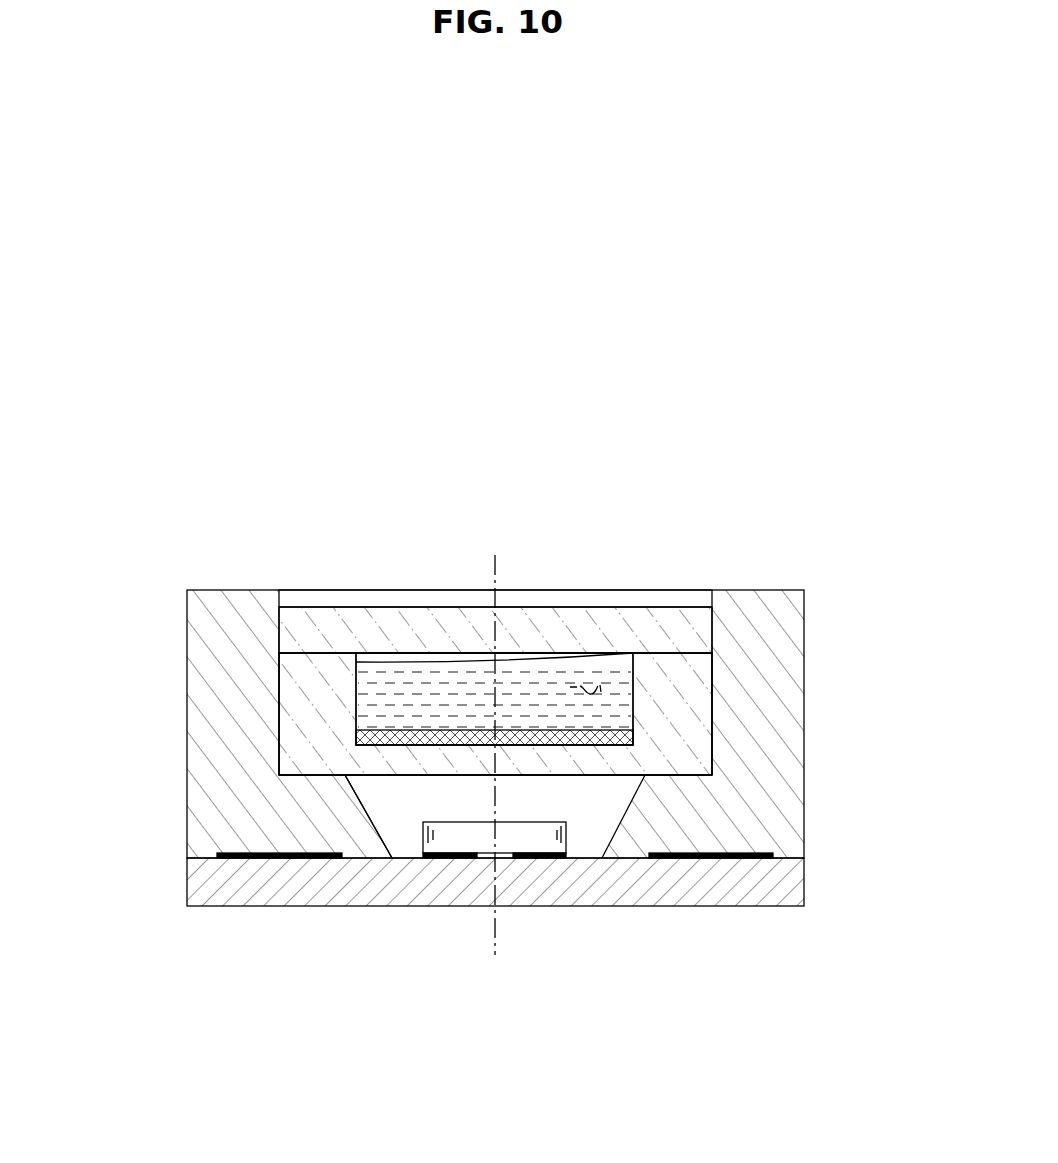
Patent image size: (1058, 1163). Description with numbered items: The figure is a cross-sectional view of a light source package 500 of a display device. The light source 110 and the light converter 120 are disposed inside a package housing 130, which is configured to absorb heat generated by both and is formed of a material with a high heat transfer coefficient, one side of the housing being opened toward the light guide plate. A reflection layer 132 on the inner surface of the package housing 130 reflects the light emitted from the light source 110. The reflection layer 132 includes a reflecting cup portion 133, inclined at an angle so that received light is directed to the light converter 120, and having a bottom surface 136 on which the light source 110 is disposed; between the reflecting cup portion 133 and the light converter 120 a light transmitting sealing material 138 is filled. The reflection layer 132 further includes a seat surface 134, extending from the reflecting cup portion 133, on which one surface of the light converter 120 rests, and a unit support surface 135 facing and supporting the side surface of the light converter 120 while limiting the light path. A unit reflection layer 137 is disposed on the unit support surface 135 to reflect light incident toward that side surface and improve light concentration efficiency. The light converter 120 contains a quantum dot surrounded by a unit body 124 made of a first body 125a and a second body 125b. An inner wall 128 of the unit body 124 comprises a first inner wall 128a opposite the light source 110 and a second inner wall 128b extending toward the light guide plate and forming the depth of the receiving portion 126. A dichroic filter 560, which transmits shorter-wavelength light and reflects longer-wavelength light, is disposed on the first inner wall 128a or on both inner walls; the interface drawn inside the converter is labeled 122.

The light source package 500 is at (499, 701).
The package housing 130 is at (765, 608).
The bottom surface 136 is at (597, 858).
The sealing material 138 is at (407, 820).
The light source 110 is at (428, 840).
The light converter 120 is at (344, 605).
The unit body 124 is at (495, 611).
The first body 125a is at (468, 623).
The second body 125b is at (520, 760).
The reflection layer 132 is at (378, 731).
The unit reflection layer 137 is at (290, 622).
The unit support surface 135 is at (278, 676).
The seat surface 134 is at (327, 775).
The reflecting cup portion 133 is at (367, 820).
The dichroic filter 560 is at (590, 742).
The inner wall 128 is at (654, 730).
The second inner wall 128b is at (633, 678).
The first inner wall 128a is at (613, 728).
The interface 122 is at (411, 672).
The receiving portion 126 is at (590, 688).